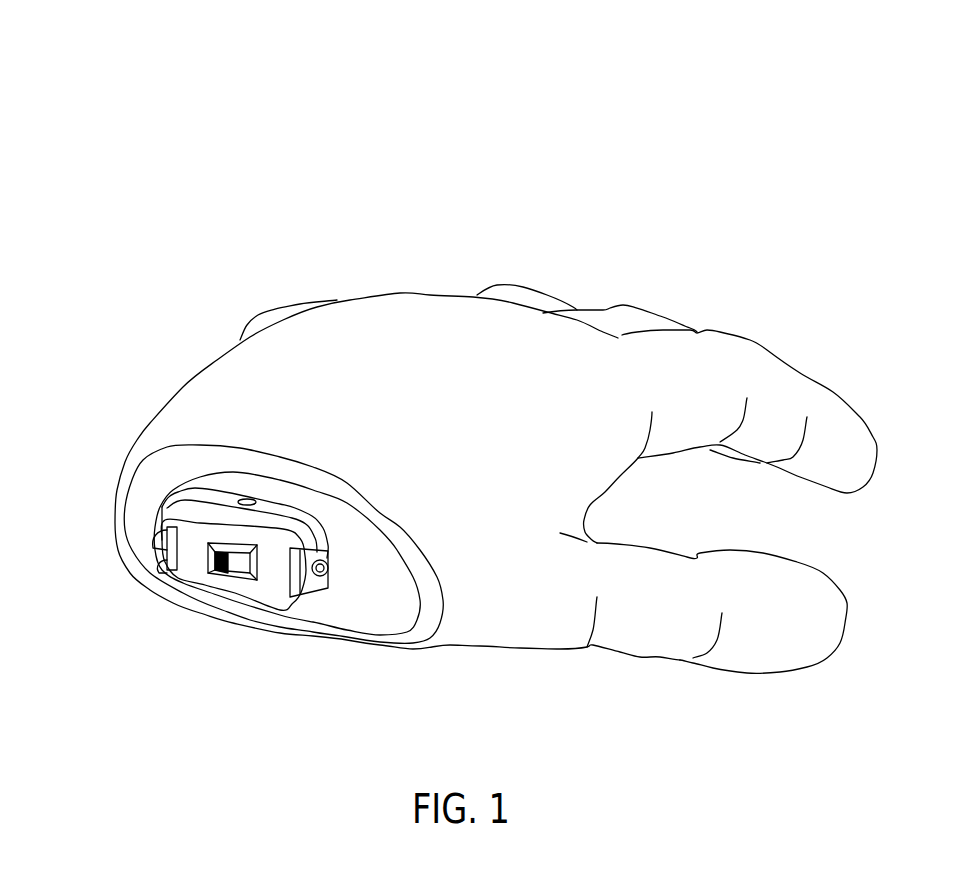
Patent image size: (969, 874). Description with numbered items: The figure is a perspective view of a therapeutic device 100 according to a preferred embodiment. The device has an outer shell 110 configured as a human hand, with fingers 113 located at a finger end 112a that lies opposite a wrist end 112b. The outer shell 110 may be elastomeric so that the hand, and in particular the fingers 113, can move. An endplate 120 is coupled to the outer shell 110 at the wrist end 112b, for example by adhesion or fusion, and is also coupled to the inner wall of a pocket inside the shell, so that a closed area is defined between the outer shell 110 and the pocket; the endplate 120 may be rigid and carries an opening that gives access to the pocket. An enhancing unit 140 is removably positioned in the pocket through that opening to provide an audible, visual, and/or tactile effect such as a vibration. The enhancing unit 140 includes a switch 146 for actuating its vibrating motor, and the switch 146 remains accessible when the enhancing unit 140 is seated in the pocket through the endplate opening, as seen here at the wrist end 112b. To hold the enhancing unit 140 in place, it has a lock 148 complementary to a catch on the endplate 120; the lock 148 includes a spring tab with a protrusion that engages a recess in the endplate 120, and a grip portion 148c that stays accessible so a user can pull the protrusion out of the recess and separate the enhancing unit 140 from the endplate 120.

The therapeutic device 100 is at (614, 78).
The outer shell 110 is at (463, 342).
The finger end 112a is at (801, 335).
The wrist end 112b is at (457, 658).
The fingers 113 is at (693, 357).
The endplate 120 is at (380, 602).
The enhancing unit 140 is at (215, 487).
The switch 146 is at (213, 568).
The lock 148 is at (341, 565).
The grip portion 148c is at (152, 545).